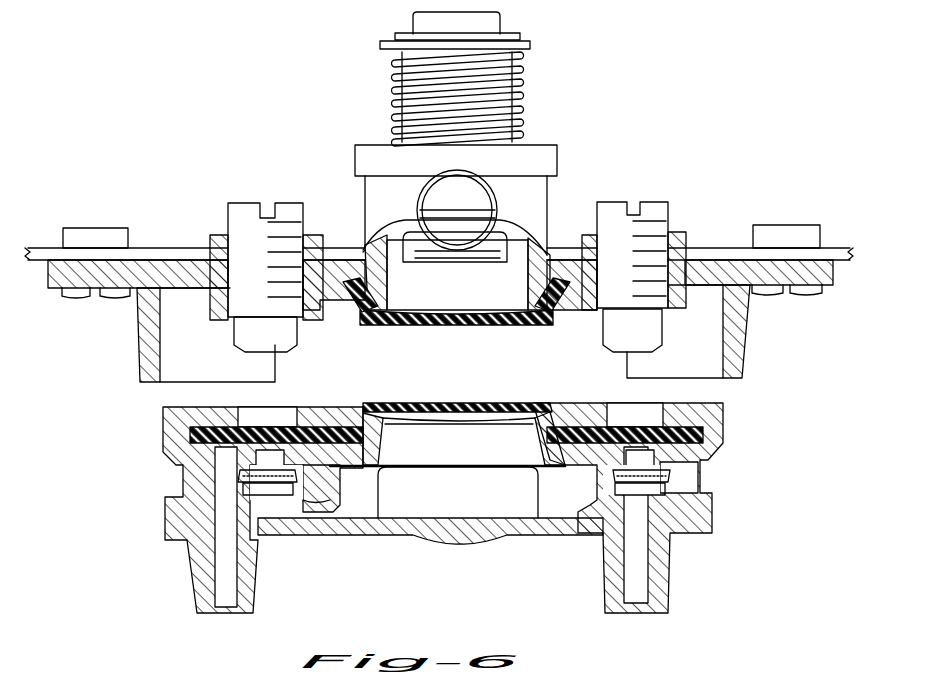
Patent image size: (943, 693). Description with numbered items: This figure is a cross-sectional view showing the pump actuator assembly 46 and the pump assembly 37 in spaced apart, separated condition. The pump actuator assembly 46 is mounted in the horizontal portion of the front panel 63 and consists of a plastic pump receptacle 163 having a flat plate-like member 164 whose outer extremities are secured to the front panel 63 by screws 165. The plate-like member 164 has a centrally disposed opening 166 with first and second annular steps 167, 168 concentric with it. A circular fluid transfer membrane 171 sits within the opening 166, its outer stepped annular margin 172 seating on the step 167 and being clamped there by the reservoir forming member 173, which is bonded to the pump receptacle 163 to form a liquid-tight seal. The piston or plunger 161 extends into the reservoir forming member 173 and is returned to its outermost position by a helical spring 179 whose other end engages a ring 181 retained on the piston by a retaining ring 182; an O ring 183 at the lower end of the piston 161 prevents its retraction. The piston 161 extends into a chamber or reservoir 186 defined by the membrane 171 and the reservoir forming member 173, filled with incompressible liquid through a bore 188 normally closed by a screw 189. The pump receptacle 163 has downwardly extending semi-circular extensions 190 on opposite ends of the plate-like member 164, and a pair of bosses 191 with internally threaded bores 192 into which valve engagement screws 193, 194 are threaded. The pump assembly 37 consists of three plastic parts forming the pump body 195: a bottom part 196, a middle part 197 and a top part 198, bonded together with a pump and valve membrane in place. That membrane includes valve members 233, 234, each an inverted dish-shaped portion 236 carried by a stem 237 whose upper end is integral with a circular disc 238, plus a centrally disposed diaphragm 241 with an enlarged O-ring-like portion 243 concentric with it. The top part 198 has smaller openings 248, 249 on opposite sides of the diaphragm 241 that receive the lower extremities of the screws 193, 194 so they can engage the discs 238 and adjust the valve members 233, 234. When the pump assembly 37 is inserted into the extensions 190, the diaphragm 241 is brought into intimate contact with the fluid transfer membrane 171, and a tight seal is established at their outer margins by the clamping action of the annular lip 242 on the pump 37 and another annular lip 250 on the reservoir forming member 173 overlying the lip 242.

The pump assembly 37 is at (130, 535).
The pump actuator assembly 46 is at (250, 168).
The front panel 63 is at (50, 250).
The piston plunger 161 is at (427, 27).
The pump receptacle 163 is at (765, 318).
The plate-like member 164 is at (167, 270).
The screws 165 is at (82, 294).
The opening 166 is at (548, 326).
The first annular step 167 is at (362, 333).
The second annular step 168 is at (337, 250).
The fluid transfer membrane 171 is at (460, 325).
The outer stepped annular margin 172 is at (553, 280).
The reservoir forming member 173 is at (563, 175).
The helical spring 179 is at (526, 94).
The ring 181 is at (532, 45).
The retaining ring 182 is at (520, 36).
The O ring 183 is at (507, 262).
The chamber or reservoir 186 is at (372, 245).
The bore 188 is at (437, 203).
The screw 189 is at (138, 352).
The semi-circular extensions 190 is at (748, 333).
The bosses 191 is at (217, 235).
The internally threaded bores 192 is at (299, 240).
The valve engagement screw 193 is at (245, 204).
The valve engagement screw 194 is at (617, 204).
The pump body 195 is at (737, 440).
The bottom part 196 is at (536, 538).
The middle part 197 is at (712, 470).
The top part 198 is at (700, 400).
The valve member 233 is at (300, 484).
The valve member 234 is at (672, 481).
The inverted dish-shaped portion 236 is at (240, 478).
The stem 237 is at (253, 456).
The circular disc 238 is at (262, 428).
The diaphragm 241 is at (437, 404).
The annular lip 242 is at (400, 405).
The enlarged portion 243 is at (378, 478).
The opening 248 is at (240, 410).
The opening 249 is at (613, 402).
The annular lip 250 is at (383, 297).